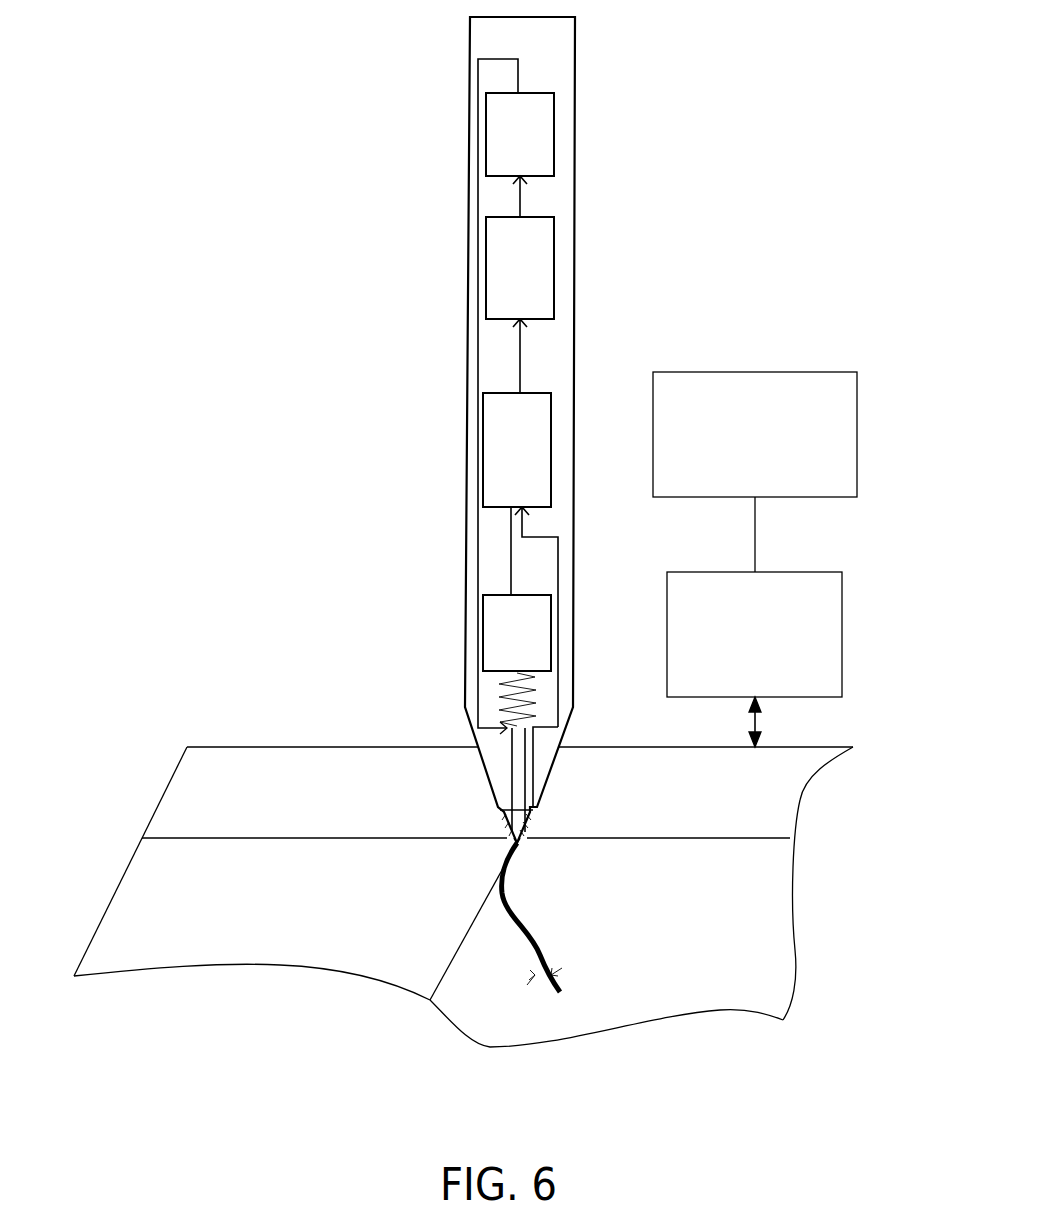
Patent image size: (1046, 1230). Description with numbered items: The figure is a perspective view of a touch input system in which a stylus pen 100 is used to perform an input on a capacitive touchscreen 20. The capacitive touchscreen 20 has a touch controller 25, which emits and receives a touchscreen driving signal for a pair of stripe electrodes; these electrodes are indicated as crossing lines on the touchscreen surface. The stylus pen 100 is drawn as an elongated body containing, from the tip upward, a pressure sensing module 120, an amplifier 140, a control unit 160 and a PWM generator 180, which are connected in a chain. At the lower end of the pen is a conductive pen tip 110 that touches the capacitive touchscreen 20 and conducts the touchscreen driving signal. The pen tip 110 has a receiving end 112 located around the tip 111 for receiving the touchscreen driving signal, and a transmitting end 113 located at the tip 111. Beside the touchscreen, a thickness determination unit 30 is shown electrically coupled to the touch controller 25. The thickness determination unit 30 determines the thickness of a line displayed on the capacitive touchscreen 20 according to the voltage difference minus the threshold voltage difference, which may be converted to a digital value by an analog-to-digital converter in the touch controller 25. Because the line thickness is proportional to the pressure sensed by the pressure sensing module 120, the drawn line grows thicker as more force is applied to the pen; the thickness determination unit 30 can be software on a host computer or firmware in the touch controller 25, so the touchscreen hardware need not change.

The stylus pen 100 is at (427, 160).
The PWM generator 180 is at (553, 146).
The control unit 160 is at (553, 272).
The amplifier 140 is at (551, 445).
The pressure sensing module 120 is at (551, 640).
The tip 111 is at (520, 824).
The receiving end 112 is at (505, 822).
The transmitting end 113 is at (518, 845).
The pen tip 110 is at (513, 860).
The capacitive touchscreen 20 is at (318, 772).
The thickness determination unit 30 is at (857, 437).
The touch controller 25 is at (842, 647).